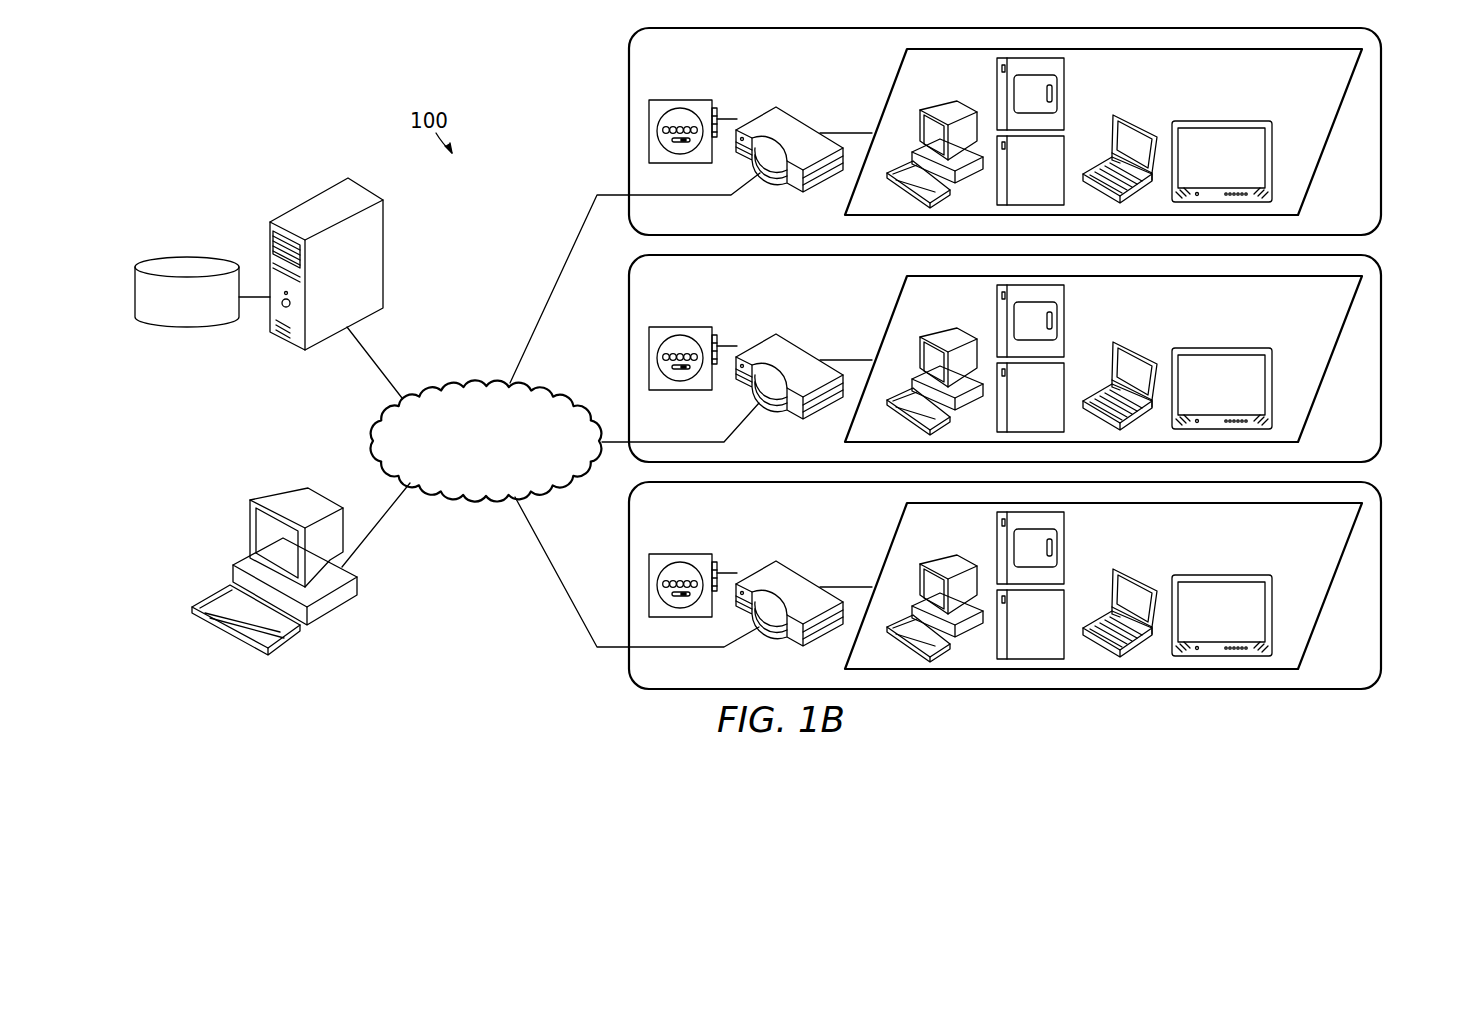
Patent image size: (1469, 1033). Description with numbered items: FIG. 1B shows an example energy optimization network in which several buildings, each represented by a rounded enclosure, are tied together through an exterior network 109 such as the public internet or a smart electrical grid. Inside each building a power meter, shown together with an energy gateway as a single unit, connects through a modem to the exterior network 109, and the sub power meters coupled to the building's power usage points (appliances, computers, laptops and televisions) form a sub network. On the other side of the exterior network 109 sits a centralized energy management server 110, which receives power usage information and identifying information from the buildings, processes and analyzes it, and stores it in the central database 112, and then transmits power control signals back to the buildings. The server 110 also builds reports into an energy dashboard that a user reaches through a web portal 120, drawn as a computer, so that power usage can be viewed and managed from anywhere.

The exterior network 109 is at (505, 456).
The energy management server 110 is at (307, 201).
The central database 112 is at (188, 262).
The web portal 120 is at (332, 615).